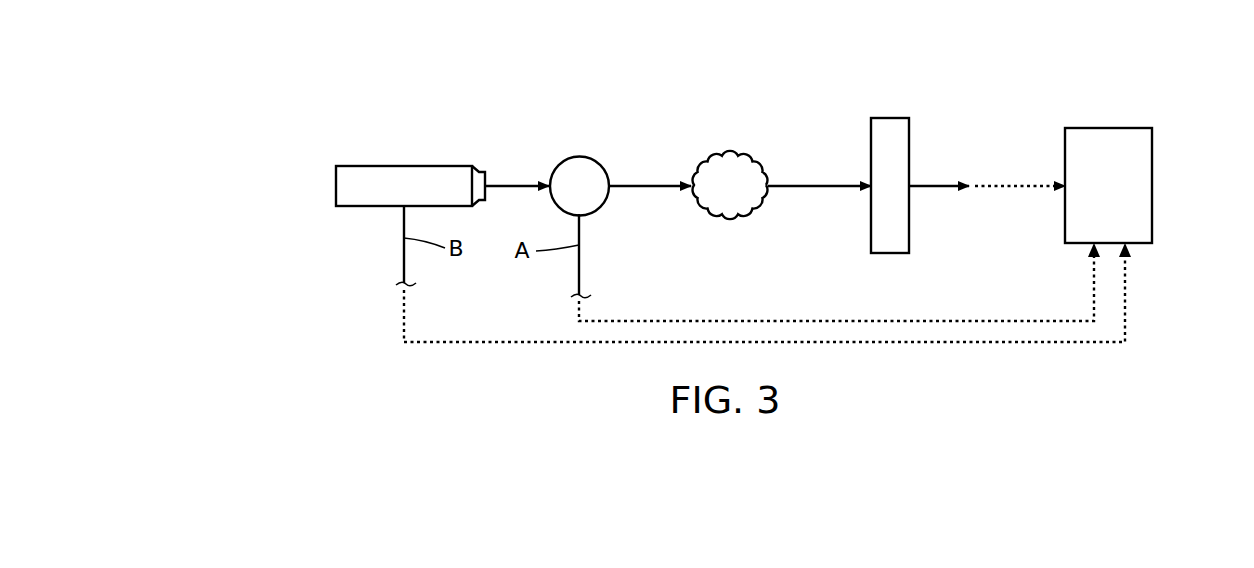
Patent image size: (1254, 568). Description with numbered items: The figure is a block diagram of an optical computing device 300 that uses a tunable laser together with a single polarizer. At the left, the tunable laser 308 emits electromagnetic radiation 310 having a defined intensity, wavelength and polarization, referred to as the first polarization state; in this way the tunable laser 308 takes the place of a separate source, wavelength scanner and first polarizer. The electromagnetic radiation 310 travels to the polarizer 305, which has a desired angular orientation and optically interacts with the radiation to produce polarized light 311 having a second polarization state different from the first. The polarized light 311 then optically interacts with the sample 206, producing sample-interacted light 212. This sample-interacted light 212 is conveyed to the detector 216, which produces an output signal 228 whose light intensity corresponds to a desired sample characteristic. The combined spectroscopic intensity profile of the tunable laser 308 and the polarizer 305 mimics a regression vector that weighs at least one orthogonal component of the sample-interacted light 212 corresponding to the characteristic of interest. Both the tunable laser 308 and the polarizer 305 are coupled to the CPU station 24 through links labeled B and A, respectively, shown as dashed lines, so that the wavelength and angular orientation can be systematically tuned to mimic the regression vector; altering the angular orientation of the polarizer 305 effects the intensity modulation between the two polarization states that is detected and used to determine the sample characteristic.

The optical computing device 300 is at (274, 46).
The tunable laser 308 is at (404, 166).
The electromagnetic radiation 310 is at (508, 186).
The polarizer 305 is at (572, 157).
The polarized light 311 is at (649, 186).
The sample 206 is at (708, 198).
The sample-interacted light 212 is at (805, 186).
The detector 216 is at (893, 118).
The output signal 228 is at (929, 186).
The CPU station 24 is at (1093, 215).